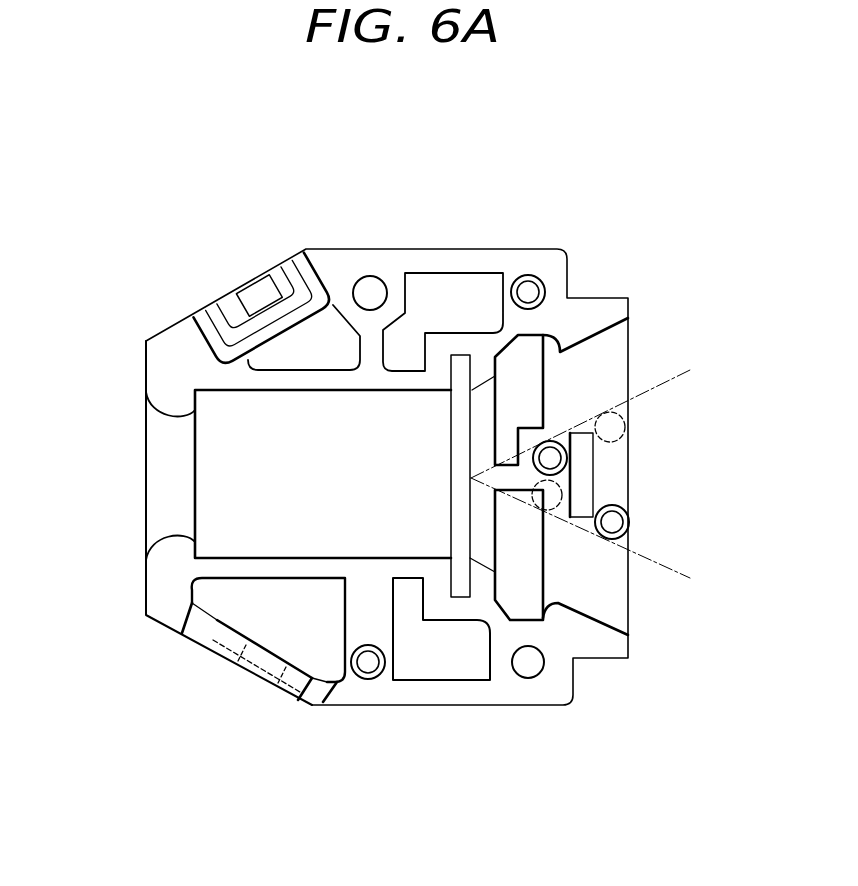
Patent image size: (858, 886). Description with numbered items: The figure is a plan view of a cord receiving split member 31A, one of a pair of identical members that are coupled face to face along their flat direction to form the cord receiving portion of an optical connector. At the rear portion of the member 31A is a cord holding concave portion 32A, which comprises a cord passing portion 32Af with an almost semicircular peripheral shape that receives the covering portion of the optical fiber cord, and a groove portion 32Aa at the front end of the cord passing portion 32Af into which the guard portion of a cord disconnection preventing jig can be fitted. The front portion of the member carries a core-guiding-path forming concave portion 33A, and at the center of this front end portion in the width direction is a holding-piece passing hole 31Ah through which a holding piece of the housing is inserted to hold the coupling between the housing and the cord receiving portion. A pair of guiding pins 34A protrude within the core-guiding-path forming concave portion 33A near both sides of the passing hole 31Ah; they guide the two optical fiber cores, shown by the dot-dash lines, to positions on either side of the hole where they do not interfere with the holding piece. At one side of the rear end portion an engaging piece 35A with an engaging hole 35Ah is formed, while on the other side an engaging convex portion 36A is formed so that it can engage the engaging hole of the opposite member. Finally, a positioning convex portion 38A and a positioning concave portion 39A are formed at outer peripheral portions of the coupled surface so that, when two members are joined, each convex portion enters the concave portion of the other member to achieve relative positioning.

The cord receiving split member 31A is at (452, 231).
The holding-piece passing hole 31Ah is at (583, 450).
The cord holding concave portion 32A is at (653, 802).
The cord passing portion 32Af is at (403, 537).
The groove portion 32Aa is at (452, 595).
The core-guiding-path forming concave portion 33A is at (610, 607).
The guiding pin 34A is at (572, 462).
The engaging piece 35A is at (212, 632).
The engaging hole 35Ah is at (212, 645).
The engaging convex portion 36A is at (254, 278).
The positioning convex portion 38A is at (538, 280).
The positioning concave portion 39A is at (372, 276).